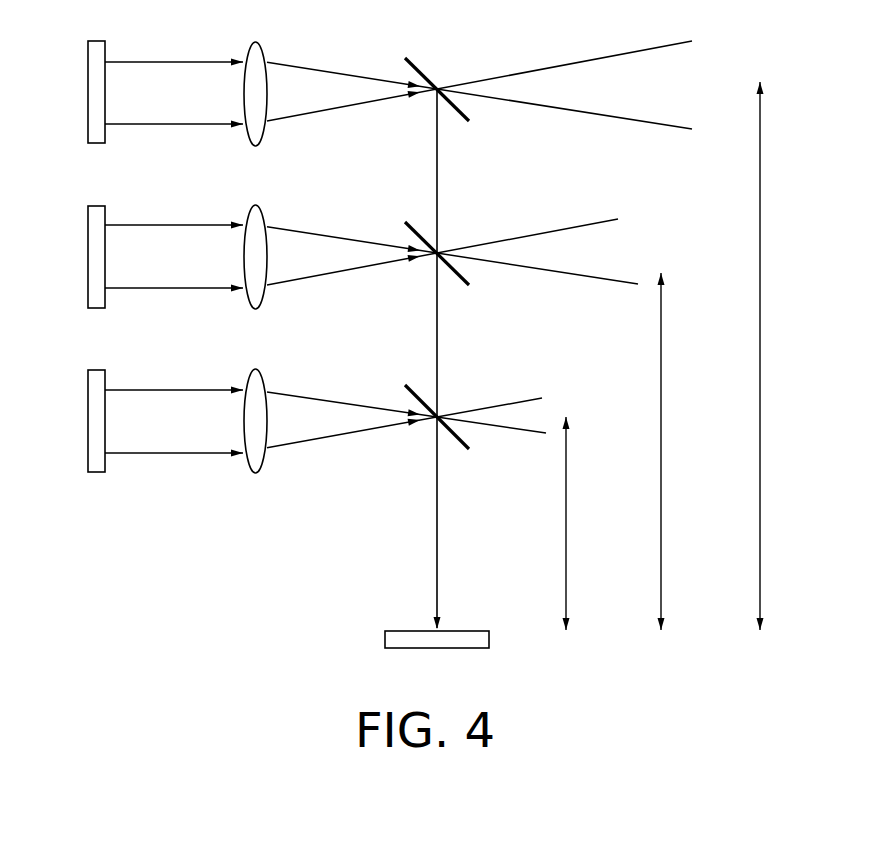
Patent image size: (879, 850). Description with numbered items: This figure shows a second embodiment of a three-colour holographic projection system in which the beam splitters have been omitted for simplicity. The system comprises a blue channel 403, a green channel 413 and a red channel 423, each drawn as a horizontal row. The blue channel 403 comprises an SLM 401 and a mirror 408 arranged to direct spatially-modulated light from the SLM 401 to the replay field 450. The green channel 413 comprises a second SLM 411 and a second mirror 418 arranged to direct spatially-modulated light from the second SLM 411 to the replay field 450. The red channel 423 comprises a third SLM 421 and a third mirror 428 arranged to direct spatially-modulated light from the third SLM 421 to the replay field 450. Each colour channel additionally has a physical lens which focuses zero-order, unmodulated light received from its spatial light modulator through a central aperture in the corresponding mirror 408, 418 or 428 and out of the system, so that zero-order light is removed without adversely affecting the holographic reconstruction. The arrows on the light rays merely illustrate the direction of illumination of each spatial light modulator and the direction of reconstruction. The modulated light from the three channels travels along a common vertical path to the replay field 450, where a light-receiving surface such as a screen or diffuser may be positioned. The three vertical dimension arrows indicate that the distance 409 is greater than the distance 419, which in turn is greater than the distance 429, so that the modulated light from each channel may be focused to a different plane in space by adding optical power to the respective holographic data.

The SLM 401 is at (67, 92).
The blue channel 403 is at (398, 97).
The mirror 408 is at (430, 82).
The distance 409 is at (787, 356).
The second SLM 411 is at (67, 257).
The green channel 413 is at (371, 263).
The second mirror 418 is at (432, 243).
The distance 419 is at (687, 451).
The third SLM 421 is at (67, 421).
The red channel 423 is at (325, 426).
The third mirror 428 is at (432, 408).
The distance 429 is at (592, 523).
The replay field 450 is at (407, 635).